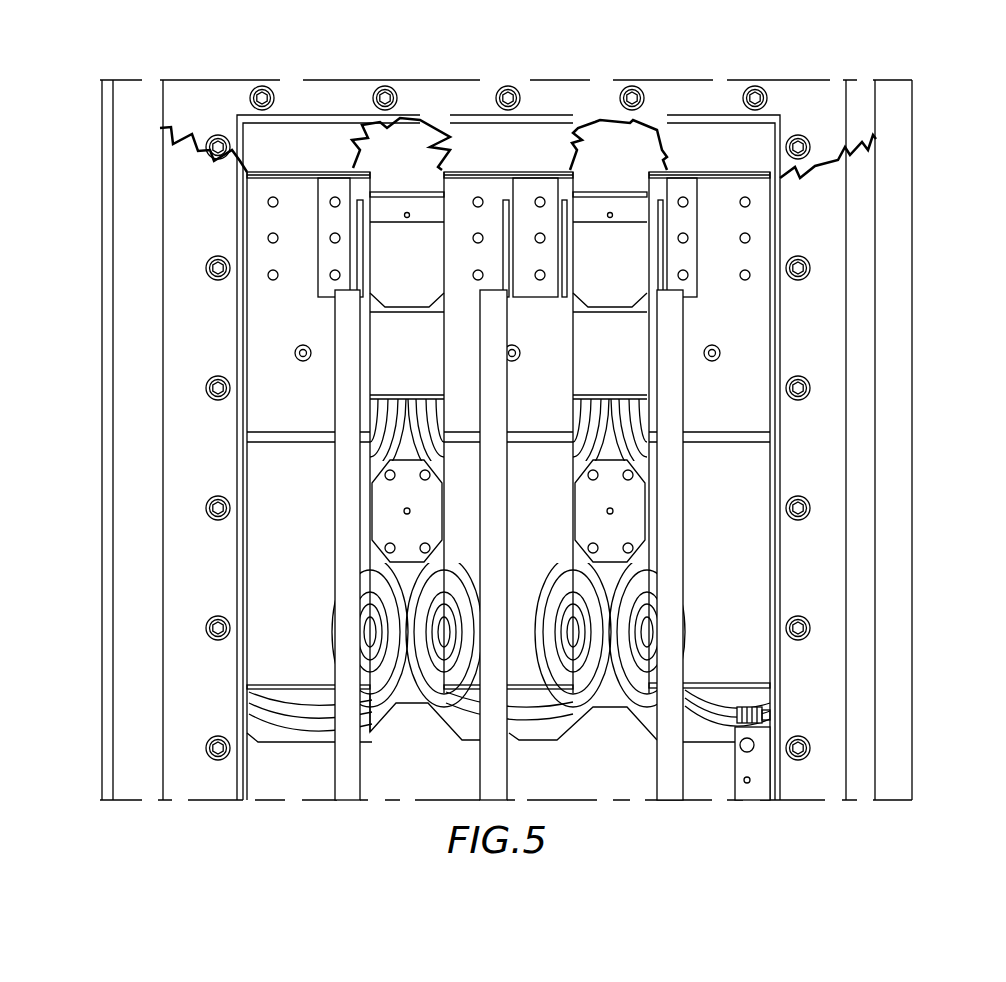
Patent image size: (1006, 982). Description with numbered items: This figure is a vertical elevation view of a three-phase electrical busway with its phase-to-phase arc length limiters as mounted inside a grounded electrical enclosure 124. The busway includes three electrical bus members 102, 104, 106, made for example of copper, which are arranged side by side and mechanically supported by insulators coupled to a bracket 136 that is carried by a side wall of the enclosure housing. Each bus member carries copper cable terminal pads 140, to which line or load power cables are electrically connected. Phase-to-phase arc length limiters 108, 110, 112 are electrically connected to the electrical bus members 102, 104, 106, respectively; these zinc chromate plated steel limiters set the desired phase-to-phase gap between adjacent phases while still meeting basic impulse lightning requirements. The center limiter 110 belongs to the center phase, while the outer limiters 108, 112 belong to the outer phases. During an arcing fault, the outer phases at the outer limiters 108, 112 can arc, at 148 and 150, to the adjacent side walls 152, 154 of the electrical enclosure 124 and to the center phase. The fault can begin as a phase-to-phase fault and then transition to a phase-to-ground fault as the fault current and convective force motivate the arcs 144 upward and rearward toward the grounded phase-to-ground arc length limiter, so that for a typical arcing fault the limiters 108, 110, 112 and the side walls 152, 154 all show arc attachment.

The electrical bus member 102 is at (740, 406).
The electrical bus member 104 is at (535, 391).
The electrical bus member 106 is at (312, 387).
The phase-to-phase arc length limiter 108 is at (723, 168).
The phase-to-phase arc length limiter 110 is at (517, 166).
The phase-to-phase arc length limiter 112 is at (323, 165).
The electrical enclosure 124 is at (917, 519).
The bracket 136 is at (633, 334).
The cable terminal pad 140 is at (508, 188).
The arc 144 is at (370, 168).
The arc location 148 is at (867, 147).
The arc location 150 is at (197, 128).
The side wall 152 is at (880, 300).
The side wall 154 is at (163, 200).